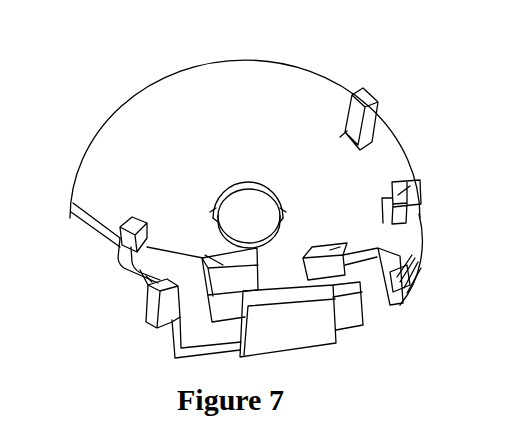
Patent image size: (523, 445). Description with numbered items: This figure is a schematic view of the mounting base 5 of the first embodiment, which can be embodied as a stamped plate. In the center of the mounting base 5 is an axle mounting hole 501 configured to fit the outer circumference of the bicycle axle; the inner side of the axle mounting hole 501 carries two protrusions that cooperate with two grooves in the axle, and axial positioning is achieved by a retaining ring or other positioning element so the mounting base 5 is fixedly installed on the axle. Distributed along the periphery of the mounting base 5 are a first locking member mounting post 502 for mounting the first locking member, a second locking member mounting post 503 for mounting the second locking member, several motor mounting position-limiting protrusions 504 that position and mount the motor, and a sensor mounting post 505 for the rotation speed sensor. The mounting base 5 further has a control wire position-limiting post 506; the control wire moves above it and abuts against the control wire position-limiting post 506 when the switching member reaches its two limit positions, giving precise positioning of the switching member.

The mounting base 5 is at (150, 123).
The axle mounting hole 501 is at (222, 193).
The first locking member mounting post 502 is at (372, 96).
The second locking member mounting post 503 is at (120, 226).
The motor mounting position-limiting protrusions 504 is at (143, 246).
The sensor mounting post 505 is at (400, 194).
The control wire position-limiting post 506 is at (345, 241).